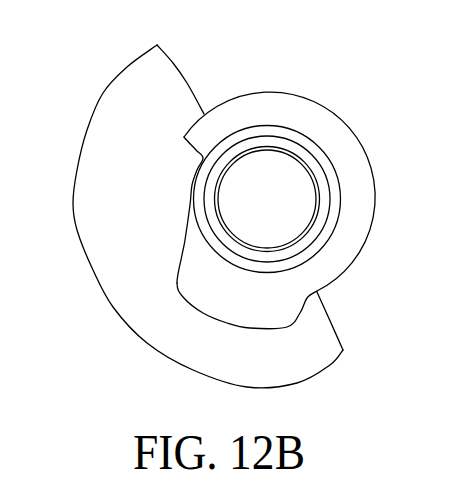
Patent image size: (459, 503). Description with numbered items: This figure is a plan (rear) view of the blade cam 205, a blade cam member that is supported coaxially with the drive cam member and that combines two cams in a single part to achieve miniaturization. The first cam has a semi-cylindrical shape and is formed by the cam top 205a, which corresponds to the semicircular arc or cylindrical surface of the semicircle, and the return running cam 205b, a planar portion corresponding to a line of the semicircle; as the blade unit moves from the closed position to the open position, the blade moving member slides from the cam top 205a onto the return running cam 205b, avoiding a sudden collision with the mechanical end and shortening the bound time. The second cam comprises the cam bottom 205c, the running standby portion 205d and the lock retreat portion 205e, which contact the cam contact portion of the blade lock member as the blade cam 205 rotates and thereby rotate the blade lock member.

The blade cam 205 is at (64, 29).
The cam top 205a is at (171, 216).
The return running cam 205b is at (250, 190).
The cam bottom 205c is at (112, 188).
The running standby portion 205d is at (287, 170).
The lock retreat portion 205e is at (205, 340).